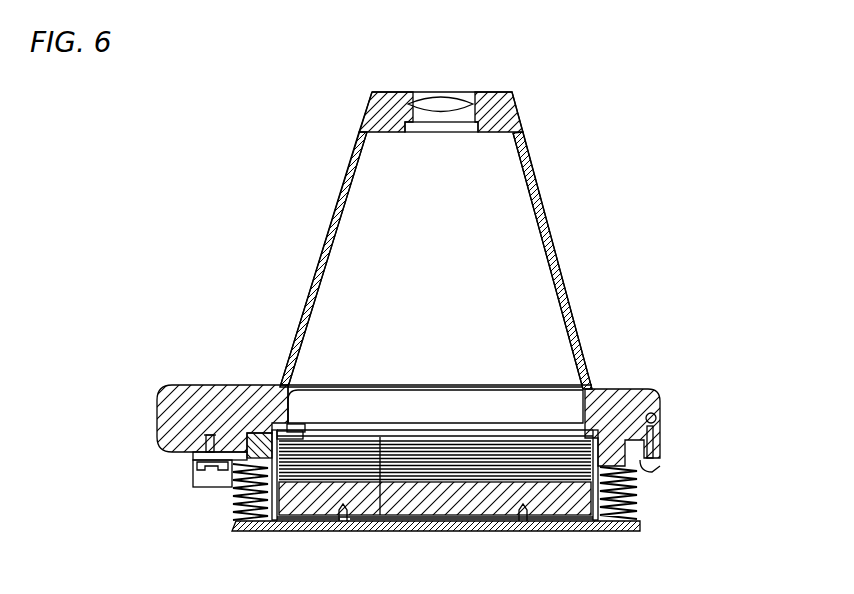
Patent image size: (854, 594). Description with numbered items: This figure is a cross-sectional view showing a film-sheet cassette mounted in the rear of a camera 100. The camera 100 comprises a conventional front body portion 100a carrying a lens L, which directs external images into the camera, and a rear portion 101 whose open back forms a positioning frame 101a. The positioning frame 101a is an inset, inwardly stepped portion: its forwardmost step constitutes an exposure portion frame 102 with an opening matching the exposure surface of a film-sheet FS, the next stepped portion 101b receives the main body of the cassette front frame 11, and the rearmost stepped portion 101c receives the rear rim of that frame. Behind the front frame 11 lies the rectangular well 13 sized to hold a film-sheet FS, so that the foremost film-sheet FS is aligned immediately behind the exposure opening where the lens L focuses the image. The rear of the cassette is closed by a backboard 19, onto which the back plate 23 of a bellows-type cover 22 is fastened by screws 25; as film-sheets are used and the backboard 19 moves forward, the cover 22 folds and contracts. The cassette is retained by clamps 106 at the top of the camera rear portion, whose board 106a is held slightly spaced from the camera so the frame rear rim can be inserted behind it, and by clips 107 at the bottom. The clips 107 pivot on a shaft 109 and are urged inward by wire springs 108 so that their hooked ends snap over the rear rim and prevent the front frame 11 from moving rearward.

The lens L is at (428, 95).
The camera 100 is at (548, 208).
The front body portion 100a is at (332, 236).
The rear portion 101 is at (178, 400).
The positioning frame 101a is at (283, 385).
The stepped portion 101b is at (256, 438).
The rearmost stepped portion 101c is at (230, 443).
The film-sheet FS is at (333, 462).
The exposure portion frame 102 is at (455, 432).
The front frame 11 is at (617, 438).
The shaft 109 is at (660, 417).
The wire spring 108 is at (655, 437).
The clip 107 is at (657, 462).
The clamp 106 is at (193, 470).
The board 106a is at (215, 468).
The bellows-type cover 22 is at (233, 508).
The well 13 is at (286, 492).
The back plate 23 is at (343, 530).
The backboard 19 is at (458, 530).
The screw 25 is at (524, 530).